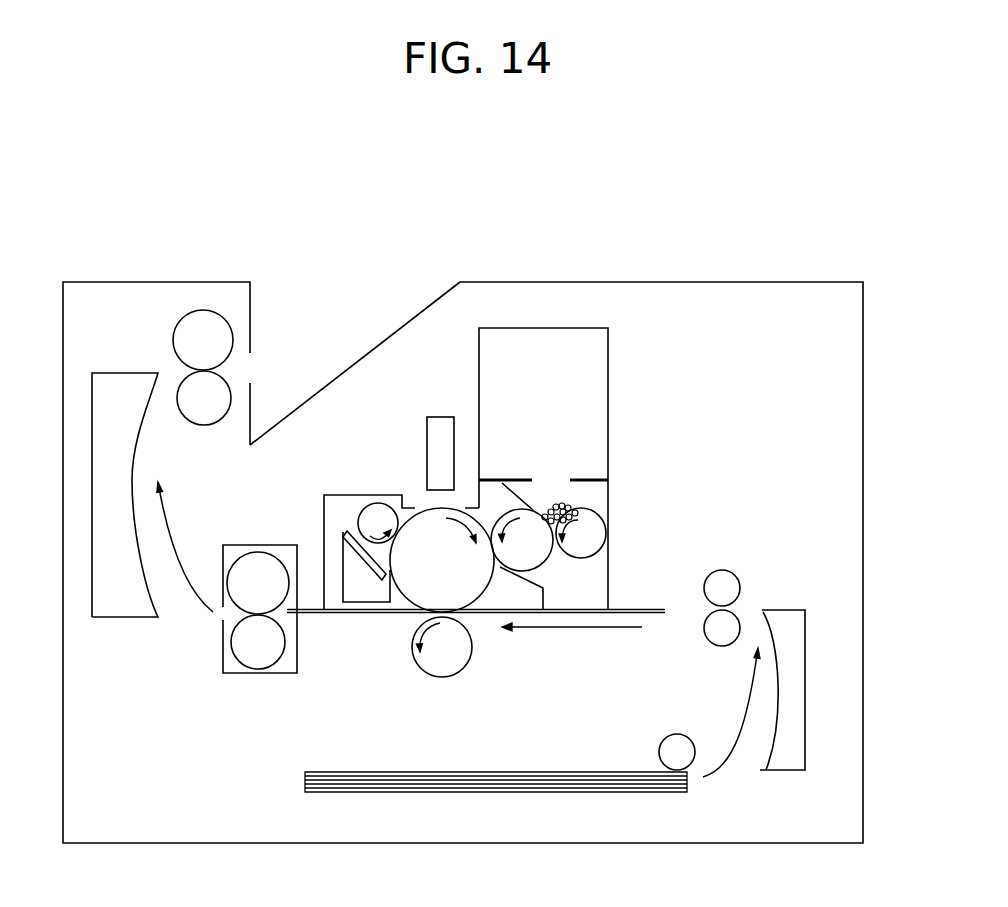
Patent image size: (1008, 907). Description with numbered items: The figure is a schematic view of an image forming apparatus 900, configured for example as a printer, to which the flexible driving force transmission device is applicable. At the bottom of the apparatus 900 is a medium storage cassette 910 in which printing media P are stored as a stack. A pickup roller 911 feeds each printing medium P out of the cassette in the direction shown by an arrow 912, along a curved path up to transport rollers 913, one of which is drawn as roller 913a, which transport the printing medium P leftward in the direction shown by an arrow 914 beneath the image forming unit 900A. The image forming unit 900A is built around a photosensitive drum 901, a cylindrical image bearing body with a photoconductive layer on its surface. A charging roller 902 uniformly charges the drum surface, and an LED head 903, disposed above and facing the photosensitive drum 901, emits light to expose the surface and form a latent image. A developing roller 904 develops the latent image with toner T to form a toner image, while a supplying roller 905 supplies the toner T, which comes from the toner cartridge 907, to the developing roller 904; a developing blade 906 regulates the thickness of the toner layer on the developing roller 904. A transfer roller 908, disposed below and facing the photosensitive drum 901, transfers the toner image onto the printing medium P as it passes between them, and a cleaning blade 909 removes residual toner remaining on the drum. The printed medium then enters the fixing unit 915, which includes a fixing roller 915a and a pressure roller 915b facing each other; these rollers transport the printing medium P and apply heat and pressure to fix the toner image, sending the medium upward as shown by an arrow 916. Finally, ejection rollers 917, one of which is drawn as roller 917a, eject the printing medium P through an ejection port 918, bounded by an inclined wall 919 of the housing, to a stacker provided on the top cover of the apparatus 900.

The image forming apparatus 900 is at (742, 282).
The image forming unit 900A is at (668, 480).
The photosensitive drum 901 is at (463, 577).
The charging roller 902 is at (368, 518).
The LED head 903 is at (435, 437).
The developing roller 904 is at (530, 552).
The supplying roller 905 is at (595, 538).
The developing blade 906 is at (517, 483).
The toner cartridge 907 is at (608, 427).
The transfer roller 908 is at (438, 662).
The cleaning blade 909 is at (337, 537).
The medium storage cassette 910 is at (553, 805).
The pickup roller 911 is at (667, 748).
The arrow 912 is at (747, 702).
The transport rollers 913 is at (772, 575).
The conveying roller 913a is at (732, 587).
The arrow 914 is at (568, 630).
The fixing unit 915 is at (220, 621).
The fixing roller 915a is at (243, 557).
The pressure roller 915b is at (230, 640).
The arrow 916 is at (168, 535).
The ejection rollers 917 is at (159, 328).
The discharge roller 917a is at (190, 327).
The ejection port 918 is at (252, 367).
The inclined wall 919 is at (310, 393).
The toner T is at (573, 507).
The printing medium P is at (665, 605).